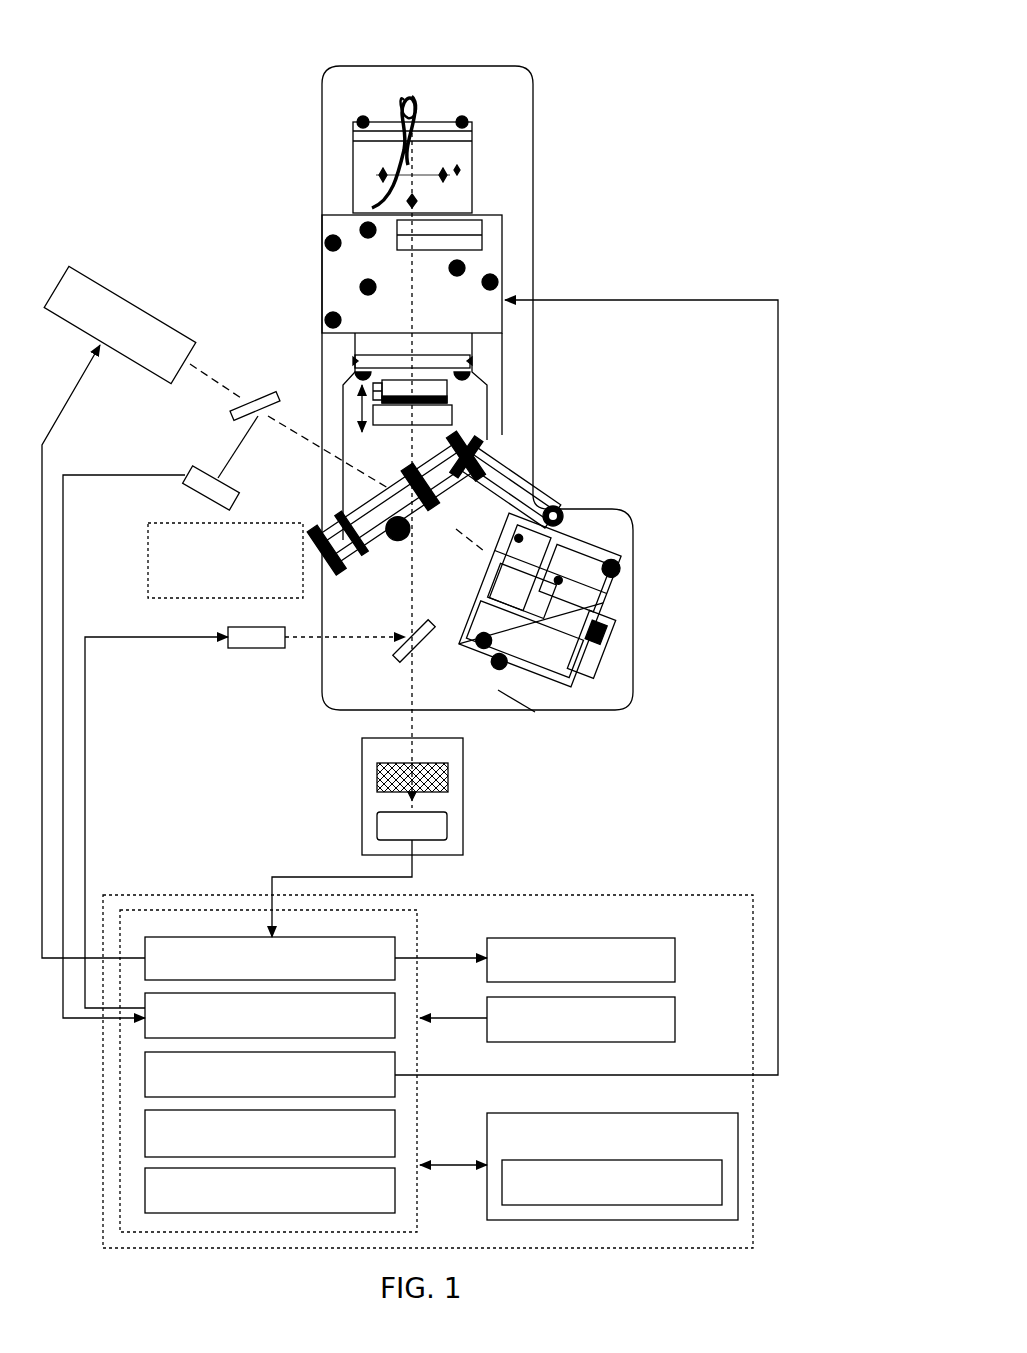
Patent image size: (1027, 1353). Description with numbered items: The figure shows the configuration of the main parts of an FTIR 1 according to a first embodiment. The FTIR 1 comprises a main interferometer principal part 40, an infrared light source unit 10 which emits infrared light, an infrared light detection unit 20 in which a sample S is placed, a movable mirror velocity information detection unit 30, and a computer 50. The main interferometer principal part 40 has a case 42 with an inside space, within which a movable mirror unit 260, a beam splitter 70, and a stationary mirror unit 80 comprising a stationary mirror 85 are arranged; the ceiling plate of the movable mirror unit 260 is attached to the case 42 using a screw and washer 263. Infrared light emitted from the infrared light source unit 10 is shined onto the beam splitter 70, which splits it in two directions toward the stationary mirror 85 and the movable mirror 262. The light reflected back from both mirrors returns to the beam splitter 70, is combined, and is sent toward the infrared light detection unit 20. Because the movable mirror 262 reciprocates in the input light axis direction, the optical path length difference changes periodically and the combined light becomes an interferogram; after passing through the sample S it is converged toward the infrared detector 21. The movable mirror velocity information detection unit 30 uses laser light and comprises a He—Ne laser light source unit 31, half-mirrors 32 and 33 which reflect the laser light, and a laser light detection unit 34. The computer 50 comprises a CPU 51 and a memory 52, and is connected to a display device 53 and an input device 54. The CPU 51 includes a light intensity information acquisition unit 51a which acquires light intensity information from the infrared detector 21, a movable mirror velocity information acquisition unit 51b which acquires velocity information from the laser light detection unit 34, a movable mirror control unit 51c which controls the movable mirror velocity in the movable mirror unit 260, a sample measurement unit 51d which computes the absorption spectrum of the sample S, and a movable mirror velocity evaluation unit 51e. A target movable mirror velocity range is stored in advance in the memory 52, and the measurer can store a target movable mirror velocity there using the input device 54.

The FTIR 1 is at (150, 82).
The infrared light source unit 10 is at (70, 263).
The infrared light detection unit 20 is at (365, 779).
The sample S is at (390, 780).
The infrared detector 21 is at (390, 826).
The movable mirror velocity information detection unit 30 is at (286, 527).
The He—Ne laser light source unit 31 is at (255, 627).
The half-mirror 32 is at (408, 636).
The half-mirror 33 is at (268, 415).
The laser light detection unit 34 is at (210, 500).
The main interferometer principal part 40 is at (435, 437).
The case 42 is at (510, 152).
The movable mirror unit 260 is at (397, 271).
The movable mirror 262 is at (438, 415).
The screw and washer 263 is at (490, 282).
The beam splitter 70 is at (515, 445).
The stationary mirror unit 80 is at (590, 507).
The stationary mirror 85 is at (508, 680).
The computer 50 is at (615, 893).
The CPU 51 is at (168, 908).
The light intensity information acquisition unit 51a is at (253, 936).
The movable mirror velocity information acquisition unit 51b is at (145, 1030).
The movable mirror control unit 51c is at (145, 1072).
The sample measurement unit 51d is at (145, 1190).
The movable mirror velocity evaluation unit 51e is at (145, 1132).
The memory 52 is at (738, 1167).
The display device 53 is at (678, 958).
The input device 54 is at (678, 1018).